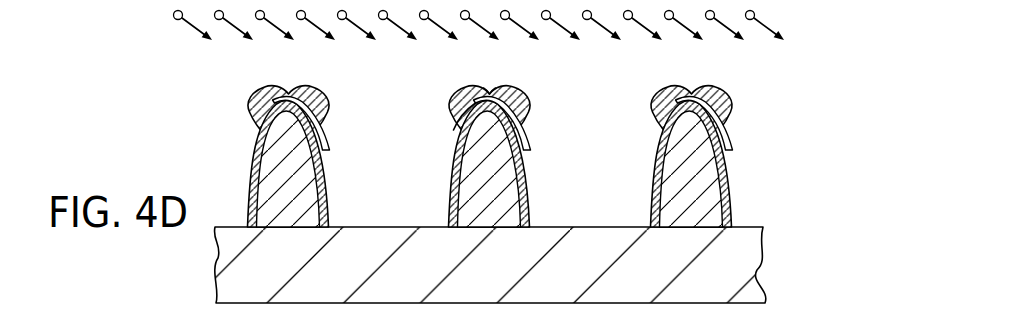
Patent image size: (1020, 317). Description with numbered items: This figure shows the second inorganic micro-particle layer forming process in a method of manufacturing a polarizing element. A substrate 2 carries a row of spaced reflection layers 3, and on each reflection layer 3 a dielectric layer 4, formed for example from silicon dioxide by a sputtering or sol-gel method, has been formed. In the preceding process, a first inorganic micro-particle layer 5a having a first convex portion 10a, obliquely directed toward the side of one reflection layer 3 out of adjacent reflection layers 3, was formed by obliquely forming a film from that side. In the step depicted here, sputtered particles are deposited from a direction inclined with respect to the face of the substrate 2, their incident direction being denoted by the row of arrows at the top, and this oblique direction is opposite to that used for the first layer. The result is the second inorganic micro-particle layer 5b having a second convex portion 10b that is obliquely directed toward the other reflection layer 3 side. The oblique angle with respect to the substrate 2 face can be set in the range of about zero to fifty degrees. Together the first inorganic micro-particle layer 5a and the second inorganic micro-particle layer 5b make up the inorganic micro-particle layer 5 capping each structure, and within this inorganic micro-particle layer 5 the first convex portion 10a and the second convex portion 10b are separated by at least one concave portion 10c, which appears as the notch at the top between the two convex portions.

The substrate 2 is at (756, 268).
The reflection layer 3 is at (515, 169).
The dielectric layer 4 is at (510, 164).
The inorganic micro-particle layer 5 is at (488, 134).
The first inorganic micro-particle layer 5a is at (529, 123).
The second inorganic micro-particle layer 5b is at (434, 115).
The first convex portion 10a is at (544, 99).
The second convex portion 10b is at (436, 100).
The concave portion 10c is at (464, 71).